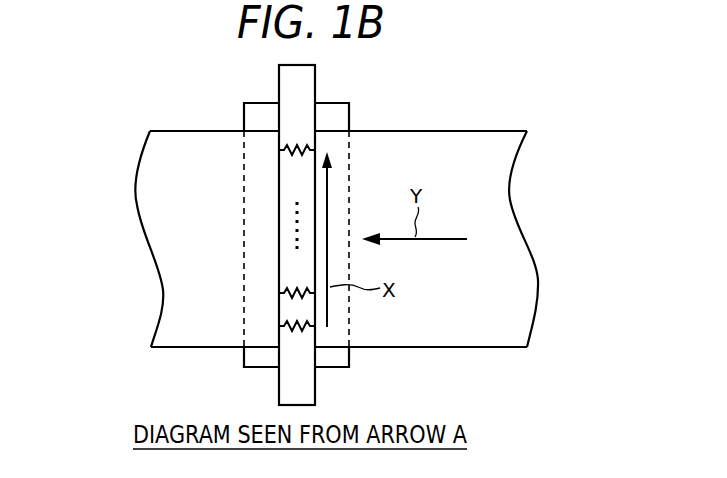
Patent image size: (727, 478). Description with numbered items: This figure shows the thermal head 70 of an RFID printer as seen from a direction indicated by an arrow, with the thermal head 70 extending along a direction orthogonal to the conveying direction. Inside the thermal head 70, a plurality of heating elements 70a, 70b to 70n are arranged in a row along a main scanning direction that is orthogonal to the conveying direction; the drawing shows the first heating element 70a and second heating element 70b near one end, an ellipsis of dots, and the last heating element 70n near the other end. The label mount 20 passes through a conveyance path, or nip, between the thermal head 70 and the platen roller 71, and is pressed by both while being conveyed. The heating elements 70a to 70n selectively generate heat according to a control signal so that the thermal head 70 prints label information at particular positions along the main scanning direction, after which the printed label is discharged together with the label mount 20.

The label mount 20 is at (421, 130).
The thermal head 70 is at (279, 81).
The heating element 70a is at (279, 326).
The heating element 70b is at (279, 291).
The heating element 70n is at (279, 148).
The platen roller 71 is at (244, 118).